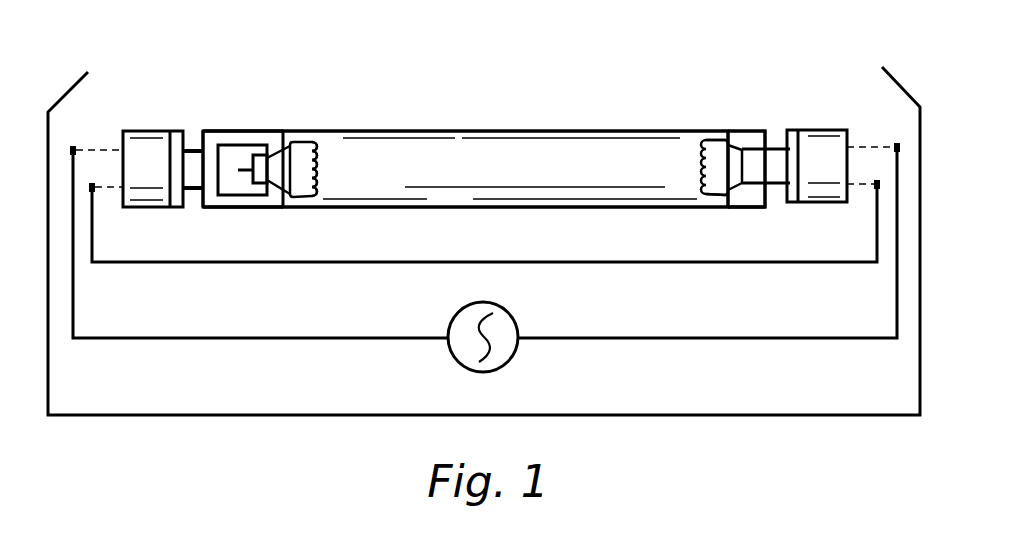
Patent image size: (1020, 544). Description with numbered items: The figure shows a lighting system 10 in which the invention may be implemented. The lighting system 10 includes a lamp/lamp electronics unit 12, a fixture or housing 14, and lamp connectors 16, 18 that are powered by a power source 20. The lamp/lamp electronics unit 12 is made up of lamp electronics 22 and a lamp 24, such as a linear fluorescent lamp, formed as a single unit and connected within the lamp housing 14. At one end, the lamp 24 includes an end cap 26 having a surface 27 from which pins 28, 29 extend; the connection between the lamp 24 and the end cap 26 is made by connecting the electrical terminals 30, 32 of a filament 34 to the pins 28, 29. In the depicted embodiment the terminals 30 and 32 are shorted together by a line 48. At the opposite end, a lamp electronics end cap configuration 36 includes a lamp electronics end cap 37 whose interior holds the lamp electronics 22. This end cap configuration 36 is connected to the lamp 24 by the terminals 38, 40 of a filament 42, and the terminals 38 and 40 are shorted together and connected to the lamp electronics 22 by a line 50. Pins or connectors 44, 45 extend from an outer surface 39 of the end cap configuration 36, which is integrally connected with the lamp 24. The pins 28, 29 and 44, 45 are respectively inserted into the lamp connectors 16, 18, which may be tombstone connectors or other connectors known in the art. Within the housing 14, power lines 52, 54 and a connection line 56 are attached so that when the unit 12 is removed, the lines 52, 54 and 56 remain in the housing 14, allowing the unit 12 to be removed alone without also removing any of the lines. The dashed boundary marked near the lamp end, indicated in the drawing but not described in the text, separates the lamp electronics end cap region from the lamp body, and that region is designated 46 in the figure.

The lighting system 10 is at (380, 72).
The lamp/lamp electronics unit 12 is at (541, 115).
The housing 14 is at (317, 415).
The lamp connector 16 is at (143, 140).
The lamp connector 18 is at (826, 138).
The power source 20 is at (506, 303).
The lamp electronics 22 is at (225, 131).
The lamp 24 is at (450, 165).
The end cap 26 is at (737, 130).
The surface 27 is at (770, 197).
The pin 28 is at (775, 148).
The pin 29 is at (772, 185).
The electrical terminal 30 is at (713, 140).
The electrical terminal 32 is at (718, 195).
The filament 34 is at (702, 172).
The lamp electronics end cap configuration 36 is at (263, 128).
The lamp electronics end cap 37 is at (246, 131).
The terminal 38 is at (303, 143).
The outer surface 39 is at (203, 207).
The terminal 40 is at (302, 200).
The filament 42 is at (322, 162).
The pin or connector 44 is at (197, 149).
The pin or connector 45 is at (192, 191).
The envelope end 46 is at (280, 222).
The line 48 is at (754, 167).
The line 50 is at (247, 172).
The power line 52 is at (247, 339).
The power line 54 is at (677, 338).
The connection line 56 is at (413, 263).